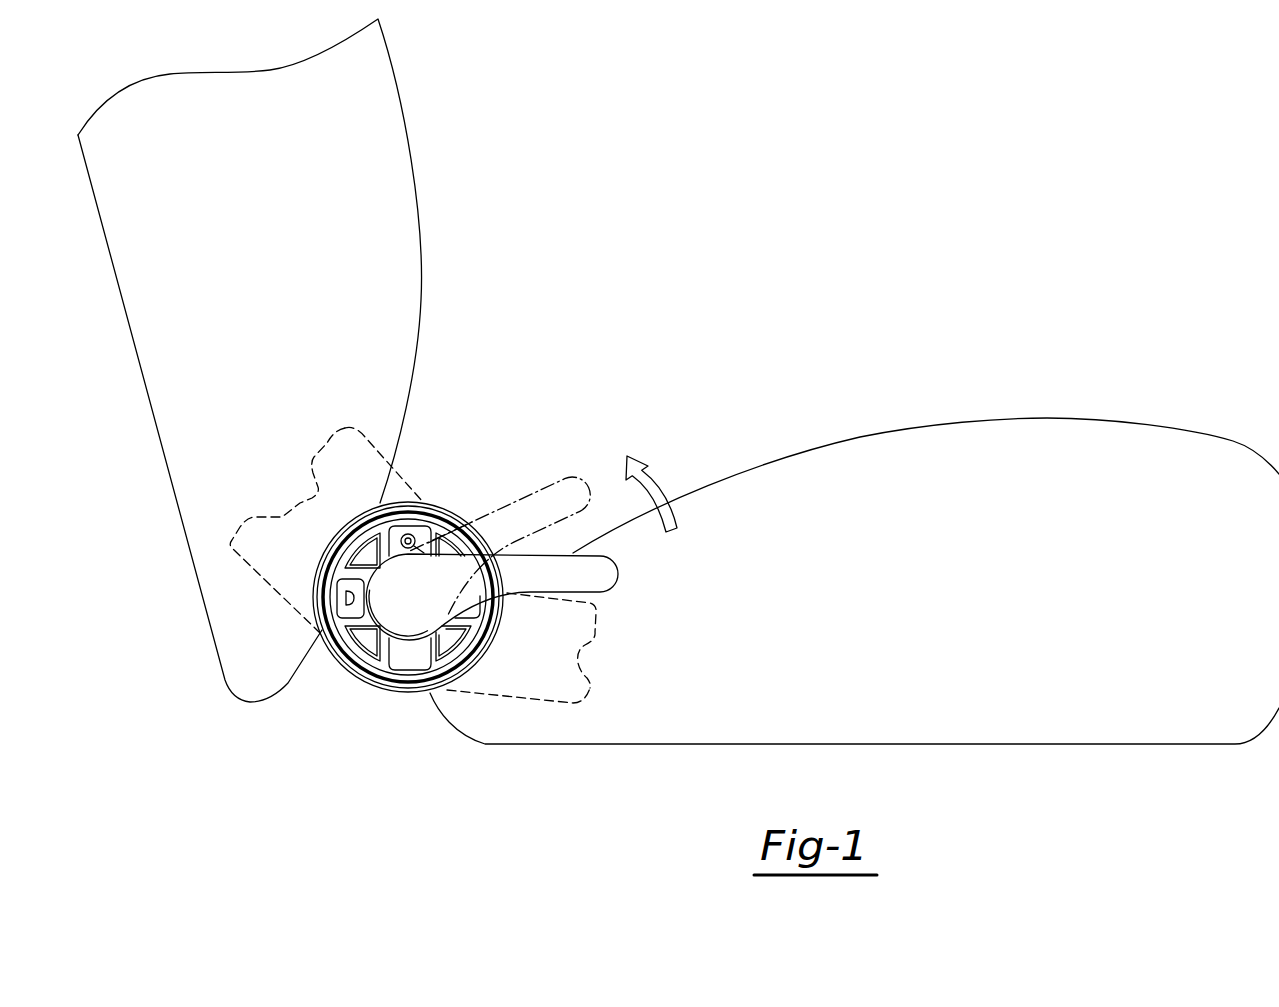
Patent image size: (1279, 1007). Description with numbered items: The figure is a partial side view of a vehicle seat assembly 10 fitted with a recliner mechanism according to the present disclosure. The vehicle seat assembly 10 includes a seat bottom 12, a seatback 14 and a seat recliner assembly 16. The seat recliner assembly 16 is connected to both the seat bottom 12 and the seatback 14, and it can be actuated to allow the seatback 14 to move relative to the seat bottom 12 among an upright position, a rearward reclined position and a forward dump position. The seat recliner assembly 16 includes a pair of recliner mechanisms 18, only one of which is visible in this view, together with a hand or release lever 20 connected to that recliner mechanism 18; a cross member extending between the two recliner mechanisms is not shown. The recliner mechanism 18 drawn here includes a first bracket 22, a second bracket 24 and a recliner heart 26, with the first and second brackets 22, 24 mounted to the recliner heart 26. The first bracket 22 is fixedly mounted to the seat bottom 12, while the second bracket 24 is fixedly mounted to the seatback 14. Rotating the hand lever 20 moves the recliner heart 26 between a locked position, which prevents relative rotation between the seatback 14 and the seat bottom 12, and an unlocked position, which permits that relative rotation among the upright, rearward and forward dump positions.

The vehicle seat assembly 10 is at (836, 170).
The seat bottom 12 is at (875, 462).
The seatback 14 is at (391, 240).
The seat recliner assembly 16 is at (315, 757).
The recliner mechanism 18 is at (401, 707).
The hand or release lever 20 is at (590, 578).
The first bracket 22 is at (590, 688).
The second bracket 24 is at (327, 443).
The recliner heart 26 is at (325, 684).